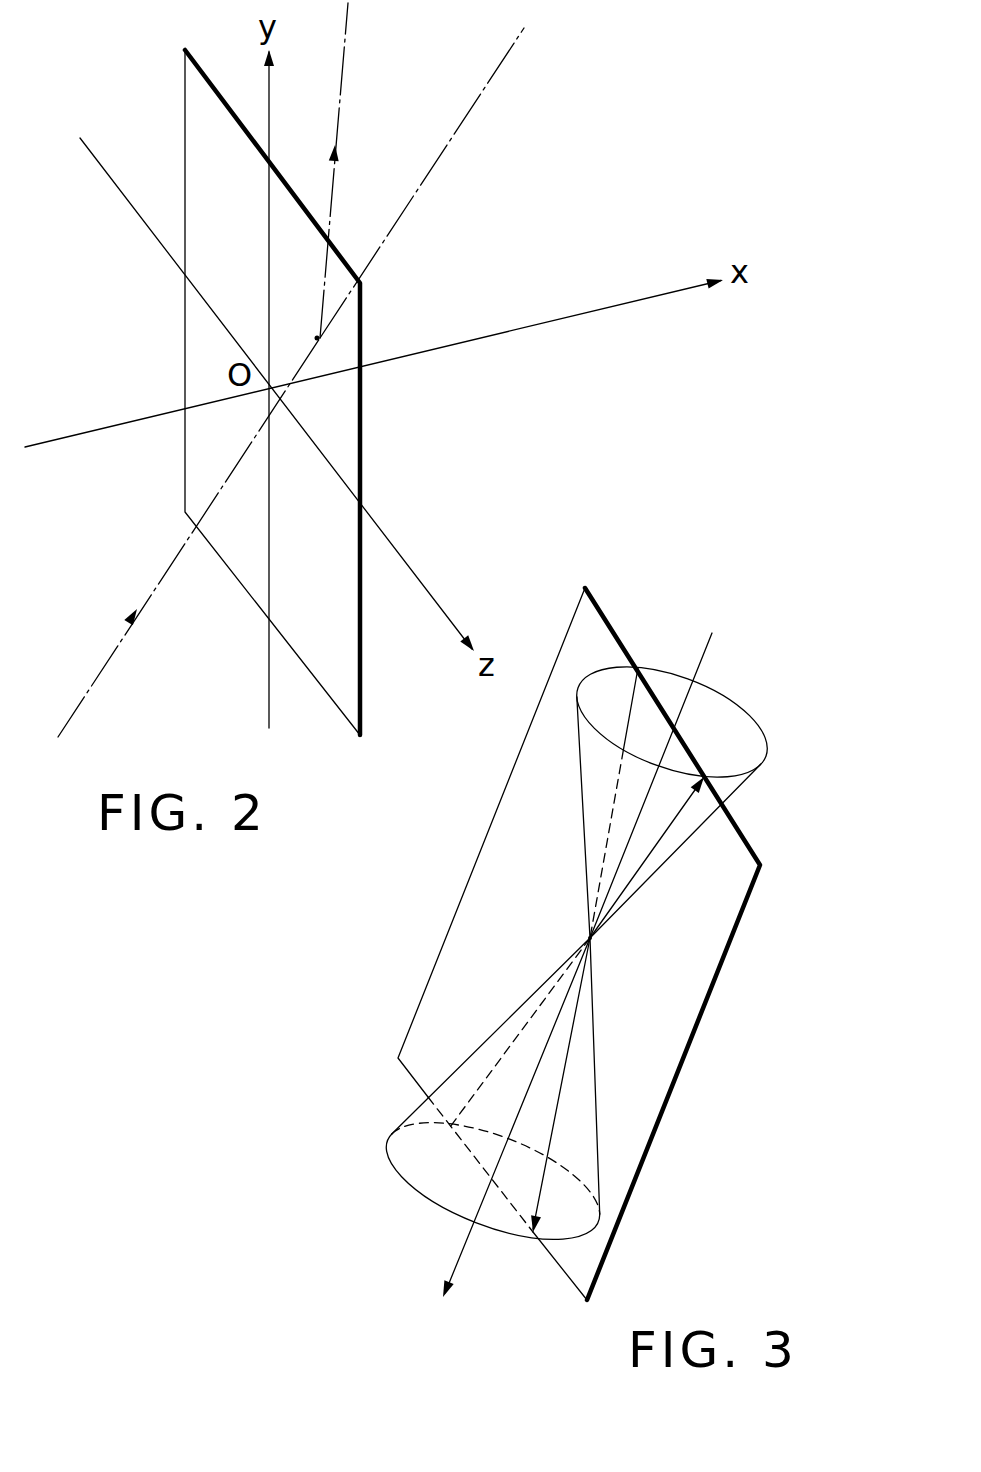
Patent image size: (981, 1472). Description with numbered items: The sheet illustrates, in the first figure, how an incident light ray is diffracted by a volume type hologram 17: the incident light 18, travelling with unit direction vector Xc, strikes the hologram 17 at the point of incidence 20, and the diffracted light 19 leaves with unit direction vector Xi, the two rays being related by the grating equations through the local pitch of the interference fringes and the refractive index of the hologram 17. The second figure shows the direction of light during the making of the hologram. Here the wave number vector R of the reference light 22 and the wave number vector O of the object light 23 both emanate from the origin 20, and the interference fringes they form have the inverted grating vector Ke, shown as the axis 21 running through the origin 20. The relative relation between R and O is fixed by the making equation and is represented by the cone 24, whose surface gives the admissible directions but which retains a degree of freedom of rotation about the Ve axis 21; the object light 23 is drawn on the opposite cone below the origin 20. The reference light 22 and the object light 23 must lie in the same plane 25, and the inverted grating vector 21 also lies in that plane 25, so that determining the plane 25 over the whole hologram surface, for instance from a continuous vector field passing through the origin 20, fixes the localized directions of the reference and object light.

In FIG. 2, the hologram 17 is at (349, 673).
In FIG. 2, the incident light 18 is at (125, 636).
In FIG. 2, the diffracted light 19 is at (338, 107).
In FIG. 2, the point of incidence 20 is at (319, 338).
In FIG. 3, the point of incidence 20 is at (588, 937).
In FIG. 3, the inverted grating vector 21 is at (457, 1252).
In FIG. 3, the reference light 22 is at (657, 852).
In FIG. 3, the object light 23 is at (560, 1090).
In FIG. 3, the cone 24 is at (722, 728).
In FIG. 3, the plane 25 is at (735, 853).